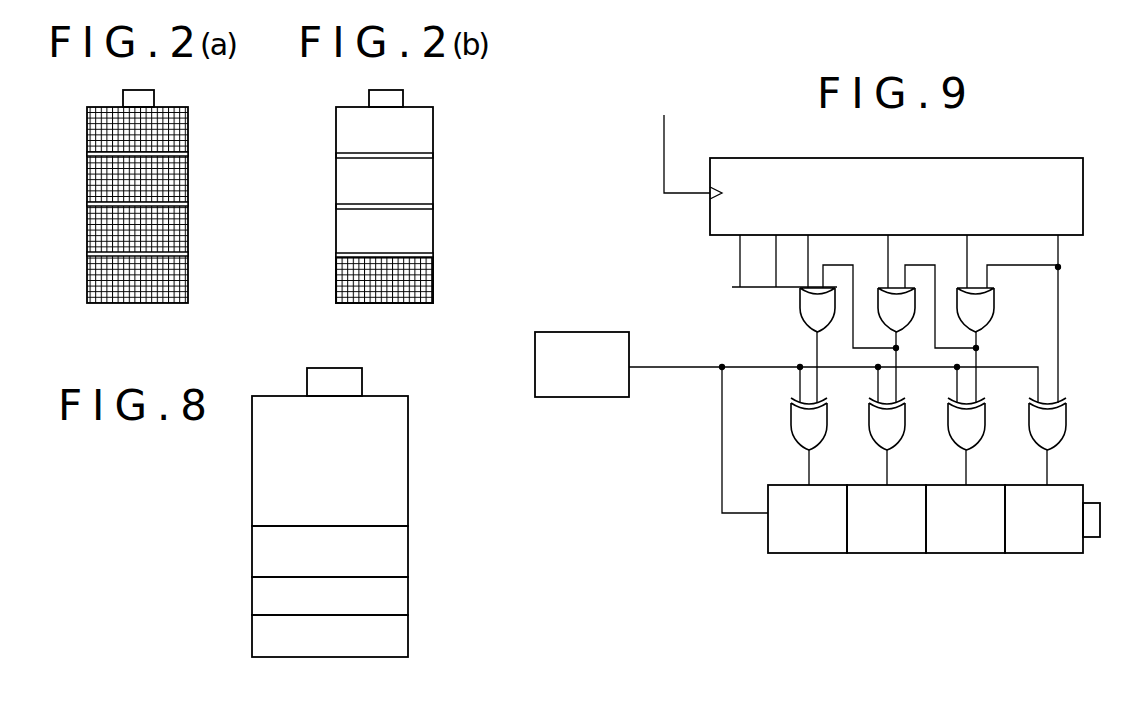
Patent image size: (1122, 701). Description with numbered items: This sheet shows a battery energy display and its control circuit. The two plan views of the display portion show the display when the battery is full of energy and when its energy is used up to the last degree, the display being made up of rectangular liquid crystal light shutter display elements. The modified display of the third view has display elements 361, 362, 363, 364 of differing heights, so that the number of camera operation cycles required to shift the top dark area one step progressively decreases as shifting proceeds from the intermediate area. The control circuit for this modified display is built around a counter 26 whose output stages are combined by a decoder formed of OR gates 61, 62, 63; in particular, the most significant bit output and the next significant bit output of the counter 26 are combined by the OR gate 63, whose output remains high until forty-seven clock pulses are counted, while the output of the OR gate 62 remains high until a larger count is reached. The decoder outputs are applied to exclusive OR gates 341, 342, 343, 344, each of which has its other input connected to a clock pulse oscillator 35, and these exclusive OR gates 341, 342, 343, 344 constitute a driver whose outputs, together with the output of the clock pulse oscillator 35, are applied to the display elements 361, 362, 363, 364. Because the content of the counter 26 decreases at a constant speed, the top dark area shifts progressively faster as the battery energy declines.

In FIG. 9, the counter 26 is at (1042, 158).
In FIG. 9, the clock pulse oscillator 35 is at (607, 332).
In FIG. 9, the OR gate 61 is at (800, 312).
In FIG. 9, the OR gate 62 is at (914, 318).
In FIG. 9, the OR gate 63 is at (994, 313).
In FIG. 9, the exclusive OR gate 341 is at (1031, 440).
In FIG. 9, the exclusive OR gate 342 is at (950, 440).
In FIG. 9, the exclusive OR gate 343 is at (871, 440).
In FIG. 9, the exclusive OR gate 344 is at (793, 441).
In FIG. 8, the liquid crystal light shutter display element 361 is at (408, 421).
In FIG. 9, the liquid crystal light shutter display element 361 is at (1046, 555).
In FIG. 8, the liquid crystal light shutter display element 362 is at (408, 543).
In FIG. 9, the liquid crystal light shutter display element 362 is at (967, 555).
In FIG. 8, the liquid crystal light shutter display element 363 is at (408, 590).
In FIG. 9, the liquid crystal light shutter display element 363 is at (887, 555).
In FIG. 8, the liquid crystal light shutter display element 364 is at (408, 633).
In FIG. 9, the liquid crystal light shutter display element 364 is at (808, 555).